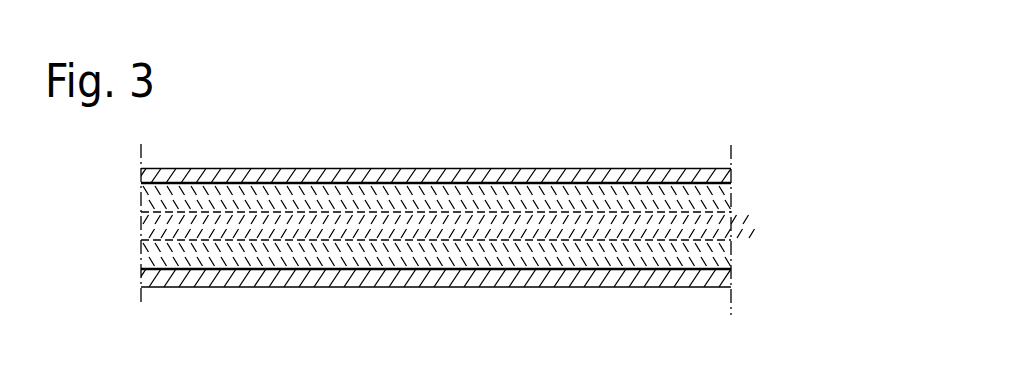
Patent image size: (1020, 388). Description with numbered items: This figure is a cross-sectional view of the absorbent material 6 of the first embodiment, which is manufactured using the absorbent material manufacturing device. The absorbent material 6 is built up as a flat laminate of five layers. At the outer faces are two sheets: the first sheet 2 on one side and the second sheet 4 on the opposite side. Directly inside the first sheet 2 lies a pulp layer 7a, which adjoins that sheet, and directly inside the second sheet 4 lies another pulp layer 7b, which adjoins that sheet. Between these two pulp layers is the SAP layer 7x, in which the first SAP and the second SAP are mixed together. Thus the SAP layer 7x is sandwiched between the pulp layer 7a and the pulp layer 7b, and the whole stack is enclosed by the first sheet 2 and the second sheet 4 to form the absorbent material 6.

The absorbent material 6 is at (799, 155).
The second sheet 4 is at (719, 179).
The pulp layer 7b is at (720, 197).
The SAP layer 7x is at (718, 226).
The pulp layer 7a is at (717, 258).
The first sheet 2 is at (719, 287).